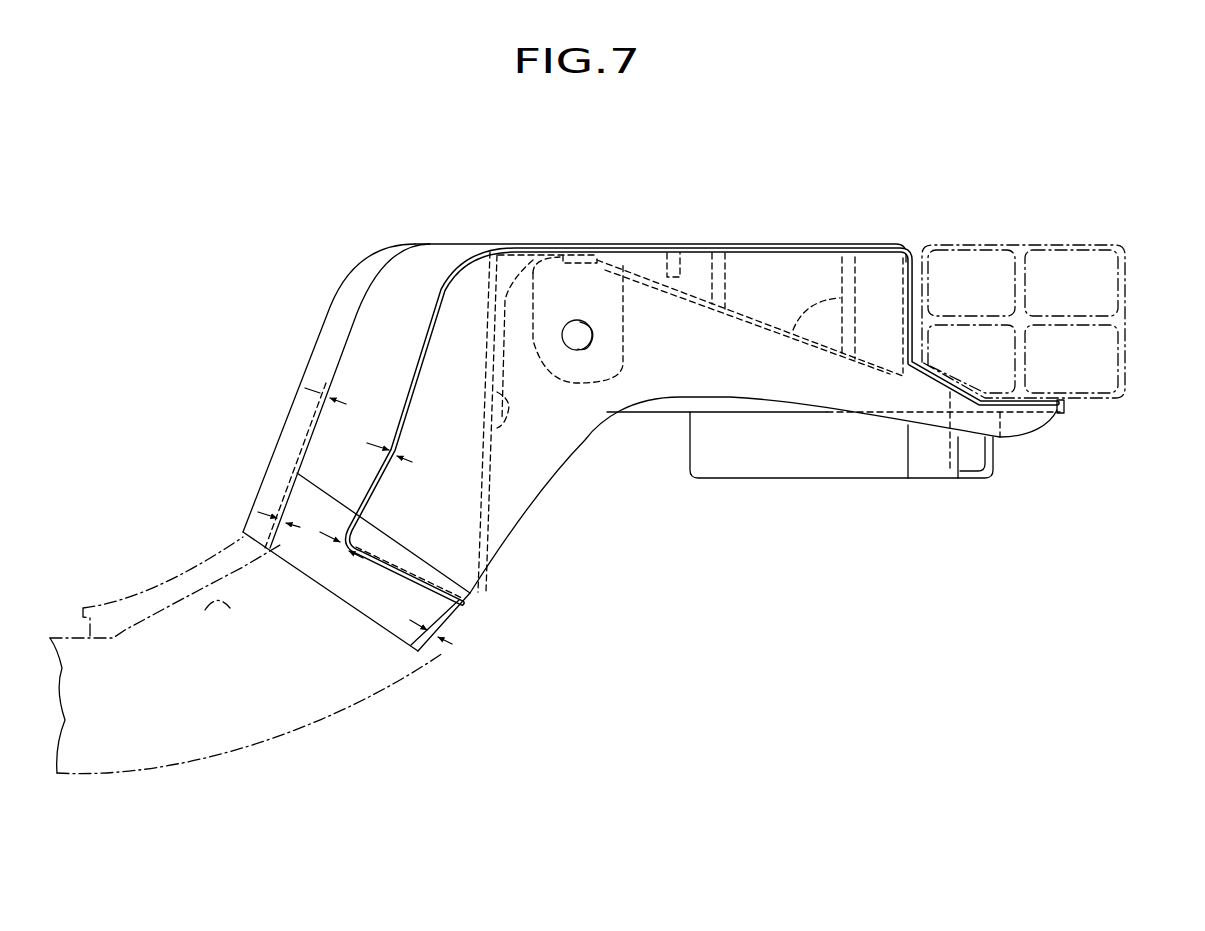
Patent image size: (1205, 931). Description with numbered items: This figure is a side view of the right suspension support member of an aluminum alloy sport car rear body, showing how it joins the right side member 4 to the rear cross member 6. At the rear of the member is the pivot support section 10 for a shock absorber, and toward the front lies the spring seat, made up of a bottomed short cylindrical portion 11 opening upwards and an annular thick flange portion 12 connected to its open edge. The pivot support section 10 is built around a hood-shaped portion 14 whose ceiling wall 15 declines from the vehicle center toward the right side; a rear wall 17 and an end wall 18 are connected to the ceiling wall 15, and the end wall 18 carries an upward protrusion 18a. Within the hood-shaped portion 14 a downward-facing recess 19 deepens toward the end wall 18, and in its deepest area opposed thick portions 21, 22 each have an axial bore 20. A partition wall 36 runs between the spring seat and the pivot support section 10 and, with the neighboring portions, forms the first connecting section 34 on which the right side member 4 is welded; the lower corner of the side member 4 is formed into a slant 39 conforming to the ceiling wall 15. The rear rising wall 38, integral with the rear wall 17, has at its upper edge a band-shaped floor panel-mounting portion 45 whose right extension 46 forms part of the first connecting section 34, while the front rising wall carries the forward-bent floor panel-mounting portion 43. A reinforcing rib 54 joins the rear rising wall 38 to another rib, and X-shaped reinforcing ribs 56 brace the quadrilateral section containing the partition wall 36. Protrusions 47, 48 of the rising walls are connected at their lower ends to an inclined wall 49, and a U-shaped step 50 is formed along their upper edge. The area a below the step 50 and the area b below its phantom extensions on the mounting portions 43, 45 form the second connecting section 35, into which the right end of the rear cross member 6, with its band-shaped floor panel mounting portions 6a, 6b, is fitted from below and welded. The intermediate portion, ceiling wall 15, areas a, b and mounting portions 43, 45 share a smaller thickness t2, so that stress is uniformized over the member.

The right side member 4 is at (1053, 245).
The rear cross member 6 is at (203, 775).
The floor panel mounting portion 6a is at (197, 580).
The floor panel mounting portion 6b is at (203, 613).
The pivot support section 10 is at (558, 280).
The bottomed short cylindrical portion 11 is at (817, 465).
The annular thick flange portion 12 is at (703, 410).
The hood-shaped portion 14 is at (648, 378).
The ceiling wall 15 is at (752, 310).
The rear wall 17 is at (733, 378).
The end wall 18 is at (505, 517).
The upward protrusion 18a is at (495, 241).
The downward-facing recess 19 is at (492, 420).
The axial bore 20 is at (593, 342).
The thick portion 21 is at (597, 280).
The thick portion 22 is at (546, 265).
The first connecting section 34 is at (1046, 392).
The second connecting section 35 is at (396, 622).
The partition wall 36 is at (897, 283).
The rear rising wall 38 is at (823, 267).
The slant 39 is at (948, 470).
The floor panel-mounting portion 43 is at (337, 307).
The floor panel-mounting portion 45 is at (433, 323).
The right extension 46 is at (928, 388).
The protrusion 47 is at (330, 447).
The protrusion 48 is at (437, 377).
The inclined wall 49 is at (452, 612).
The U-shaped step 50 is at (305, 490).
The reinforcing rib 54 is at (687, 245).
The X-shaped reinforcing ribs 56 is at (750, 324).
The area a is at (357, 606).
The area b is at (262, 522).
The thickness t2 is at (330, 385).